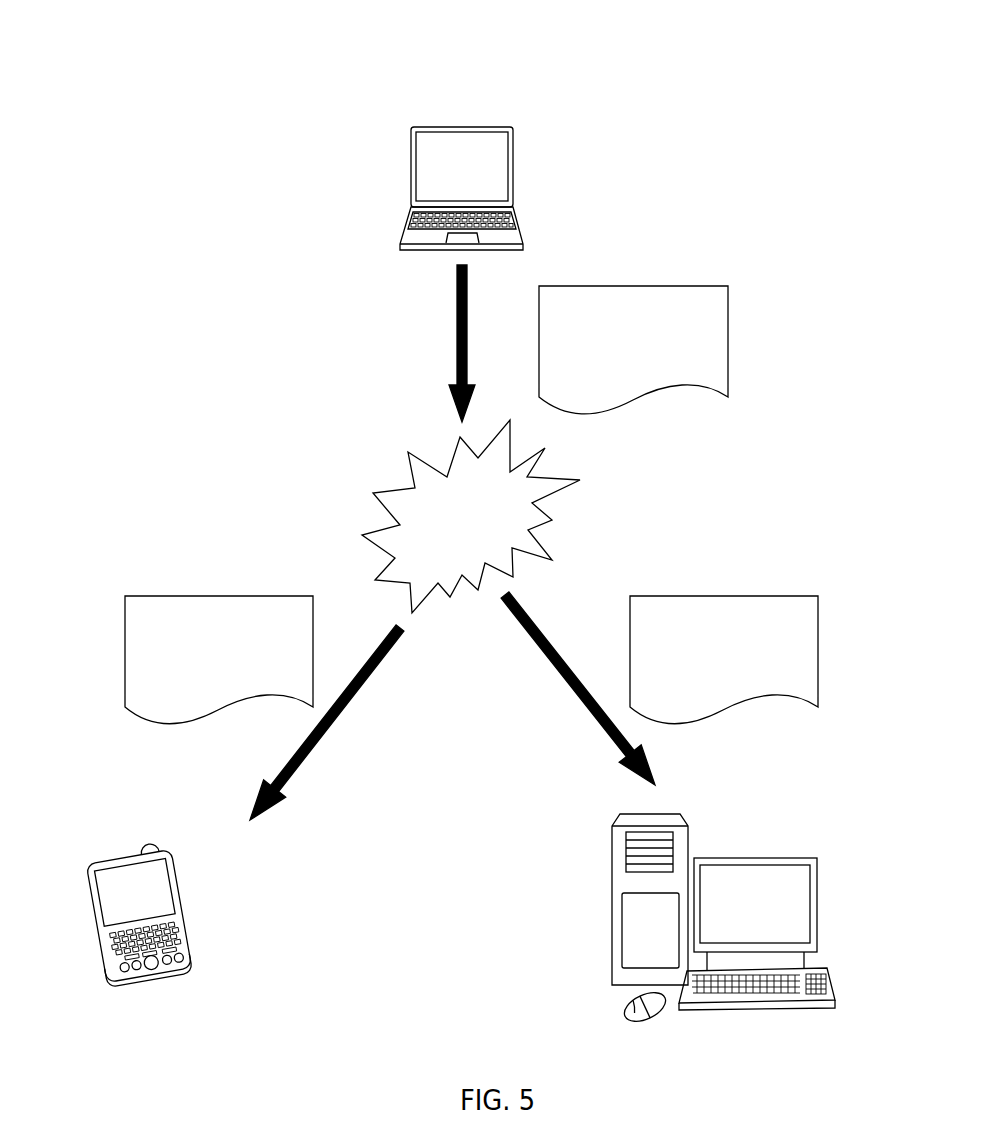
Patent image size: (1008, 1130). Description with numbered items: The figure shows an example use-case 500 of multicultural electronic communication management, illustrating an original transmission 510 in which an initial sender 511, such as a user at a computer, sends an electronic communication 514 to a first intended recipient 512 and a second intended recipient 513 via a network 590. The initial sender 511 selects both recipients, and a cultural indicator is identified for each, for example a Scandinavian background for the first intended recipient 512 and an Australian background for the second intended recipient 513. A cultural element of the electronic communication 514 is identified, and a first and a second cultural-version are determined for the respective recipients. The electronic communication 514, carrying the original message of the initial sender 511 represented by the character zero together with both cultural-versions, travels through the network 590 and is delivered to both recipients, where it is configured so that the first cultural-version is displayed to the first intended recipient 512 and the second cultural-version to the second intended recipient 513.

The use-case 500 is at (494, 26).
The original transmission 510 is at (607, 80).
The initial sender 511 is at (514, 173).
The first intended recipient 512 is at (187, 910).
The second intended recipient 513 is at (818, 914).
The electronic communication 514 is at (539, 327).
The network 590 is at (478, 541).